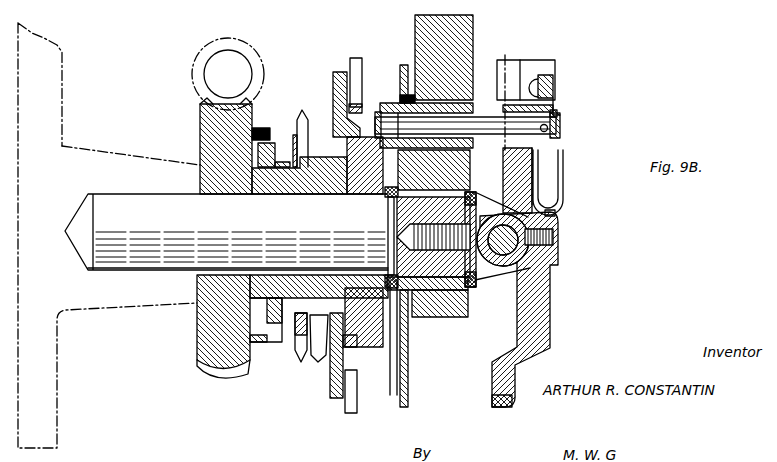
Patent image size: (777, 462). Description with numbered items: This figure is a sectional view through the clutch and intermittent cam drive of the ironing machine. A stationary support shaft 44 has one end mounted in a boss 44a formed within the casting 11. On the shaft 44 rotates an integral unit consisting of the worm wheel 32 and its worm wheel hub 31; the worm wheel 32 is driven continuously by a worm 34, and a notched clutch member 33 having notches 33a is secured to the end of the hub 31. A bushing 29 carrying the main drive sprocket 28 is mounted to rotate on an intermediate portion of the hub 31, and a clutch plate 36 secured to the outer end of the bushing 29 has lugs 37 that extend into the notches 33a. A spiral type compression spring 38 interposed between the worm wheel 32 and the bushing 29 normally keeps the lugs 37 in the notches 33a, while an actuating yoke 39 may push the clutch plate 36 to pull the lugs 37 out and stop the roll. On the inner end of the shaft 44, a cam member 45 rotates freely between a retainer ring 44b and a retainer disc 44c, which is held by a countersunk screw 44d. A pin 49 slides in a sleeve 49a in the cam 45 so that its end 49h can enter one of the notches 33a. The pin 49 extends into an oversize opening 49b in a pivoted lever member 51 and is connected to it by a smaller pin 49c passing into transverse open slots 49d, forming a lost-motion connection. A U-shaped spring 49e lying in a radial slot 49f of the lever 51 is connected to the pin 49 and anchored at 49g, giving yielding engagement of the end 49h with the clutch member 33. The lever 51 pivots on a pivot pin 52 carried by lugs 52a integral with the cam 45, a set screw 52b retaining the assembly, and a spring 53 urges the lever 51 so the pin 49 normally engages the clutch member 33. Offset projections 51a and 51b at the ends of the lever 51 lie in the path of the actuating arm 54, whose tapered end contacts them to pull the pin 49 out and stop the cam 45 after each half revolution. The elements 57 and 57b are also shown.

The casting 11 is at (42, 45).
The worm 34 is at (225, 42).
The worm wheel 32 is at (207, 127).
The boss 44a is at (98, 158).
The spiral type compression spring 38 is at (272, 147).
The clutch plate 36 is at (333, 78).
The actuating yoke 39 is at (355, 58).
The notches 33a is at (358, 113).
The guide plate 57b is at (402, 66).
The cam member 45 is at (473, 23).
The sleeve 49a is at (478, 100).
The actuating arm 54 is at (532, 63).
The offset projection 51a is at (547, 73).
The oversize opening 49b is at (553, 115).
The transverse open slots 49d is at (560, 125).
The pin 49 is at (560, 137).
The smaller pin 49c is at (541, 128).
The pin end 49h is at (373, 118).
The lugs 37 is at (345, 141).
The anchor 49g is at (503, 160).
The countersunk screw 44d is at (485, 200).
The radial slot 49f is at (540, 178).
The U-shaped spring 49e is at (565, 192).
The spring 53 is at (556, 213).
The set screw 52b is at (557, 238).
The pivoted lever member 51 is at (552, 275).
The worm wheel hub 31 is at (318, 187).
The retainer ring 44b is at (387, 215).
The support shaft 44 is at (137, 255).
The pivot pin 52 is at (505, 252).
The lugs 52a is at (490, 283).
The retainer disc 44c is at (482, 282).
The main drive sprocket 28 is at (295, 357).
The bushing 29 is at (317, 352).
The notched clutch member 33 is at (372, 362).
The guide plate 57 is at (408, 380).
The offset projection 51b is at (490, 400).